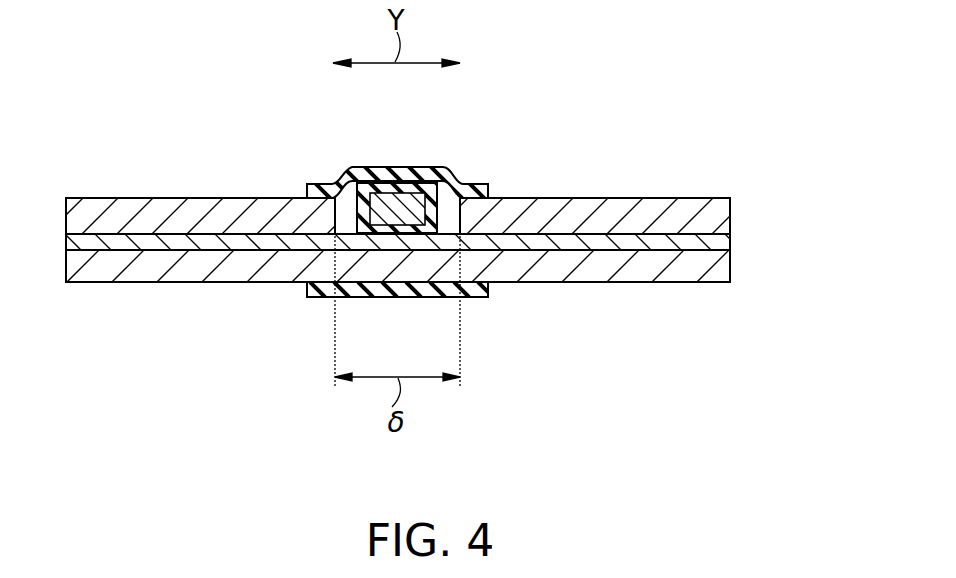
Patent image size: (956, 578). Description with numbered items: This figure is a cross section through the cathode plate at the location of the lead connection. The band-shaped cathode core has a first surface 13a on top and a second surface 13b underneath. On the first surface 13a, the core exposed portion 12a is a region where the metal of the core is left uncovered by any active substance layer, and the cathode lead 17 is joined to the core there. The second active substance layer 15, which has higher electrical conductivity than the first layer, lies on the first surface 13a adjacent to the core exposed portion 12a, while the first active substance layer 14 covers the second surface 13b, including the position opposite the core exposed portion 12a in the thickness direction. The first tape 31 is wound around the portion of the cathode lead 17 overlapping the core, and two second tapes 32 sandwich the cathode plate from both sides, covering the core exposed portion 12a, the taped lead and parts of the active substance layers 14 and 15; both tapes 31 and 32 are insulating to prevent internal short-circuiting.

The core exposed portion 12a is at (453, 216).
The first surface 13a is at (540, 234).
The second surface 13b is at (538, 252).
The first active substance layer 14 is at (150, 270).
The second active substance layer 15 is at (149, 206).
The cathode lead 17 is at (378, 190).
The first tape 31 is at (351, 209).
The second tape 32 is at (413, 167).